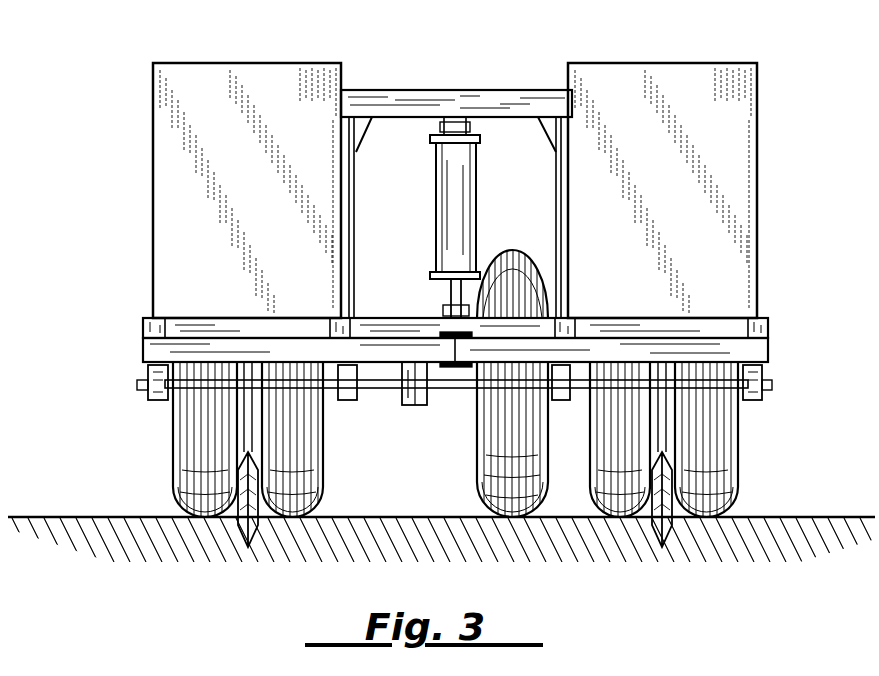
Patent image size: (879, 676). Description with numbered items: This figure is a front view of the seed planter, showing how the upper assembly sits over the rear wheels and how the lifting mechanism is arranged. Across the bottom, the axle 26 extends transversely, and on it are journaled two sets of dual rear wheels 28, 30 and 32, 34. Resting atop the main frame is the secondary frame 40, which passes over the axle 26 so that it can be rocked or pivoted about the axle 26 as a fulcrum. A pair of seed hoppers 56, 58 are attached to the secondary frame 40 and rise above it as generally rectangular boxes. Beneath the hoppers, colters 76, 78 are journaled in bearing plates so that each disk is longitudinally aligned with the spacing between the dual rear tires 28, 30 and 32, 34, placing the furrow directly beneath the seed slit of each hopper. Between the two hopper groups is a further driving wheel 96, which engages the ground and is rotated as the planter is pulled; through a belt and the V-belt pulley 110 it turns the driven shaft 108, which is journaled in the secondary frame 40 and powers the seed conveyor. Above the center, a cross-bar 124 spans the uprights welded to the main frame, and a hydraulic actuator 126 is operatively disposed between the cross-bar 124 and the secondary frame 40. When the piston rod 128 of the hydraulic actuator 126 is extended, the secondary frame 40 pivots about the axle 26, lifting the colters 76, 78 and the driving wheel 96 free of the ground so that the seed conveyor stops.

The axle 26 is at (137, 385).
The rear wheel 28 is at (177, 450).
The rear wheel 30 is at (322, 452).
The rear wheel 32 is at (588, 452).
The rear wheel 34 is at (735, 452).
The secondary frame 40 is at (146, 318).
The seed hopper 56 is at (222, 152).
The seed hopper 58 is at (650, 152).
The colter 76 is at (660, 535).
The colter 78 is at (246, 527).
The driving wheel 96 is at (478, 452).
The driven shaft 108 is at (462, 388).
The V-belt pulley 110 is at (423, 405).
The cross-bar 124 is at (402, 90).
The hydraulic actuator 126 is at (435, 215).
The piston rod 128 is at (452, 300).